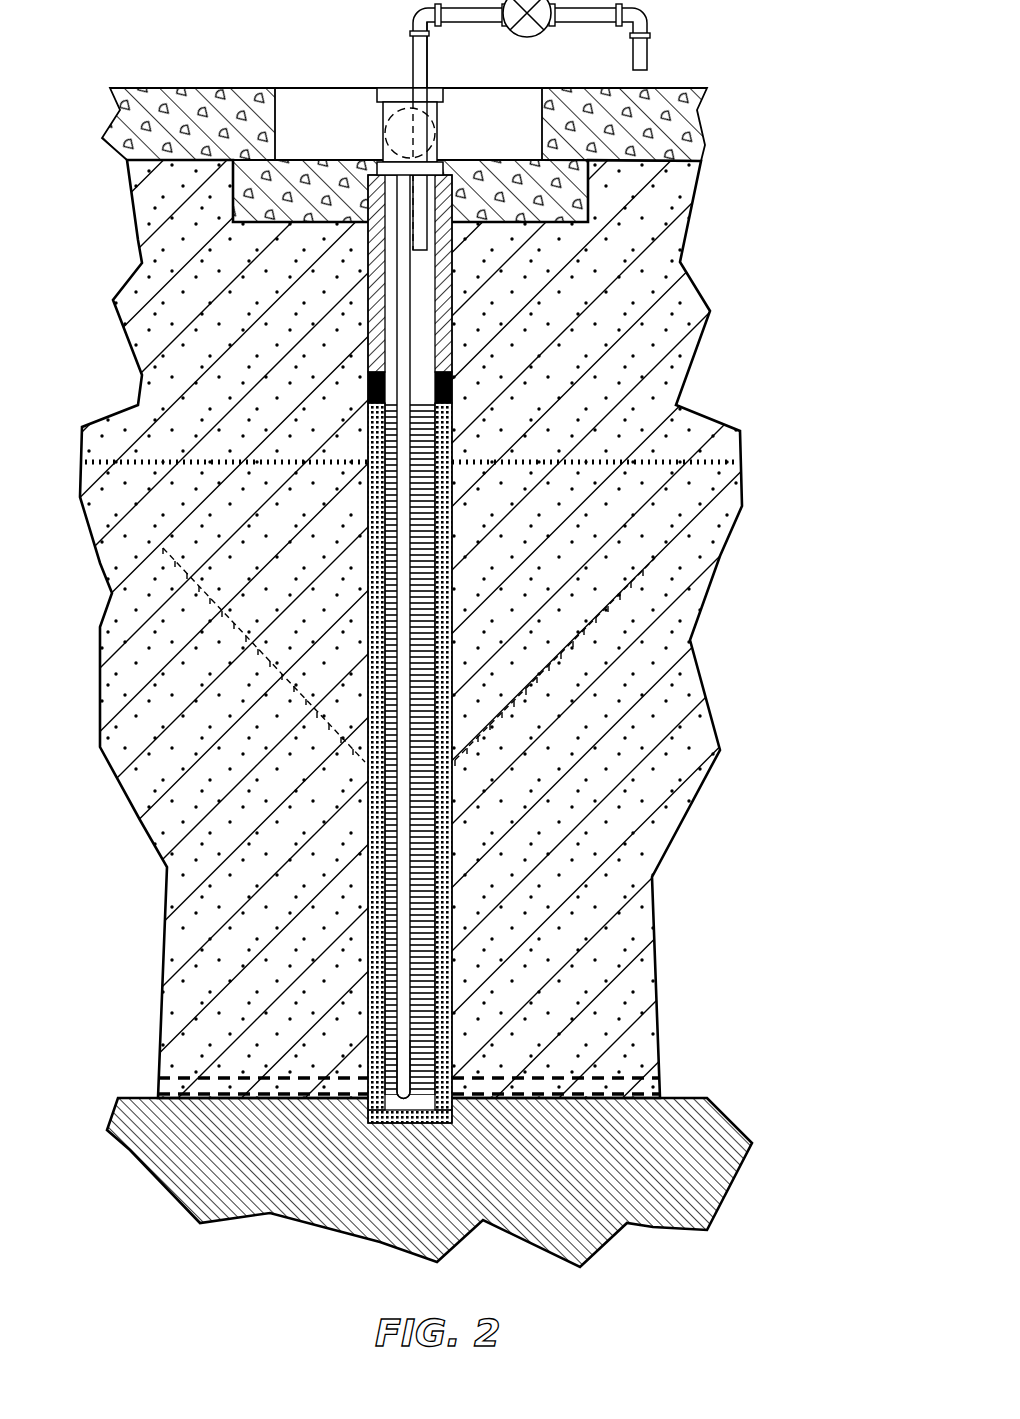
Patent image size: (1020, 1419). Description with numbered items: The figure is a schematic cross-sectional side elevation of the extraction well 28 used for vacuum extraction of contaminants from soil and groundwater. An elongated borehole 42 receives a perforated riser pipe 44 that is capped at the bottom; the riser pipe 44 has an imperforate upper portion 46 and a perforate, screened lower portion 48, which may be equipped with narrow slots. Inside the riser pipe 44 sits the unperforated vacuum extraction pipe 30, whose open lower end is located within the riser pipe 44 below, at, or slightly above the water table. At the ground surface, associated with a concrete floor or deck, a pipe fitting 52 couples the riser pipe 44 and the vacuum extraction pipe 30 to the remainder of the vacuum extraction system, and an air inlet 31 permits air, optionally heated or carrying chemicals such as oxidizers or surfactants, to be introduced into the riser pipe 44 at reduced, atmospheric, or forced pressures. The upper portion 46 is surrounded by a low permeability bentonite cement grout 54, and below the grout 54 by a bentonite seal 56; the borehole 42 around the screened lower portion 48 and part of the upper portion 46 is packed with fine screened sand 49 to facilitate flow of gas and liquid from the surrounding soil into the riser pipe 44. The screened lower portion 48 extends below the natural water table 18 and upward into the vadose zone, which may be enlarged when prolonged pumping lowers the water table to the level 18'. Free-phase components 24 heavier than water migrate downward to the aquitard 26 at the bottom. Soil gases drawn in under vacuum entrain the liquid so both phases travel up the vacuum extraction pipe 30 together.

The natural water table 18 is at (444, 709).
The lowered water table 18' is at (478, 657).
The free-phase components heavier than water 24 is at (585, 1078).
The aquitard 26 is at (177, 1165).
The extraction well 28 is at (483, 640).
The vacuum extraction pipe 30 is at (402, 978).
The air inlet 31 is at (650, 49).
The borehole 42 is at (370, 957).
The riser pipe 44 is at (337, 537).
The imperforate upper portion 46 is at (420, 322).
The perforate (screened) lower portion 48 is at (407, 1037).
The fine screened sand 49 is at (452, 914).
The pipe fitting 52 is at (383, 130).
The bentonite cement grout 54 is at (372, 317).
The bentonite seal 56 is at (368, 390).